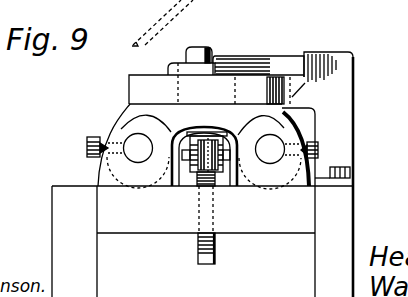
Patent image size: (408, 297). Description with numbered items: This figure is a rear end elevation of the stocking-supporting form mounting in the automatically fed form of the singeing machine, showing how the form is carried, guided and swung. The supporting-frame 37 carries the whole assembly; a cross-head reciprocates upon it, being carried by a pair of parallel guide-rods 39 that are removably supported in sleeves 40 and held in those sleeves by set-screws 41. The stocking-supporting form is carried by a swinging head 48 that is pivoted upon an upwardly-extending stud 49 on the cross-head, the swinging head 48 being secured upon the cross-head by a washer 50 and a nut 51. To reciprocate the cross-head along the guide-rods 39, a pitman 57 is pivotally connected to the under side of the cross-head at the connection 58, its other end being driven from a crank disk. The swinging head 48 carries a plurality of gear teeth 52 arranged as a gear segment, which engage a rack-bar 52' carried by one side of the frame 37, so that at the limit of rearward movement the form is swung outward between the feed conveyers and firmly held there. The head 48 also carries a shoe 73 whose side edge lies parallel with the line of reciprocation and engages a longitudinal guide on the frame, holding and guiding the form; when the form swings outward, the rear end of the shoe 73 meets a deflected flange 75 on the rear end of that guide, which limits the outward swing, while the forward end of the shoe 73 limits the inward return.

The supporting-frame 37 is at (88, 279).
The guide-rods 39 is at (146, 160).
The sleeves 40 is at (121, 128).
The set-screws 41 is at (87, 148).
The swinging head 48 is at (129, 94).
The stud 49 is at (178, 90).
The washer 50 is at (178, 63).
The nut 51 is at (217, 62).
The gear teeth 52 is at (264, 102).
The rack-bar 52' is at (330, 54).
The pitman 57 is at (198, 255).
The pivotal connection 58 is at (197, 175).
The shoe 73 is at (284, 64).
The deflected flange 75 is at (340, 77).